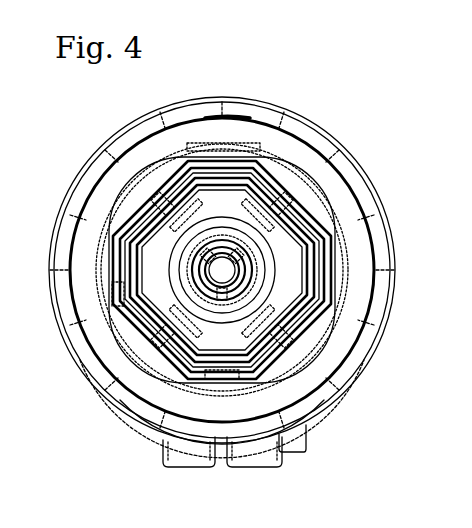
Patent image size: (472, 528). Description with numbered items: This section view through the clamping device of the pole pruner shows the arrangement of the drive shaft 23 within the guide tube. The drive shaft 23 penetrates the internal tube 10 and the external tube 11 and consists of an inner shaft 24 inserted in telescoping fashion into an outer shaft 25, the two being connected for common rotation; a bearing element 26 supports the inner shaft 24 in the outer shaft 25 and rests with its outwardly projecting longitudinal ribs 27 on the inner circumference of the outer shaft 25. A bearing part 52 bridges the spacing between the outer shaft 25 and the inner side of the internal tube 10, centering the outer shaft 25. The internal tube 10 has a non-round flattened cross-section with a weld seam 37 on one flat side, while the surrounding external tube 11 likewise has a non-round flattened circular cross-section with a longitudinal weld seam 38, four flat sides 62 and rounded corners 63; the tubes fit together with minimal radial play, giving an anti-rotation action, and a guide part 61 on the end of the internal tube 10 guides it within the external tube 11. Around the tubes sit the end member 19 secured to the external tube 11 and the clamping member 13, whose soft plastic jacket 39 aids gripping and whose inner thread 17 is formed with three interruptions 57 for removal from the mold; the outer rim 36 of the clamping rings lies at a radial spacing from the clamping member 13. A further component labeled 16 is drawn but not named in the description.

The internal tube 10 is at (326, 257).
The external tube 11 is at (321, 230).
The clamping member 13 is at (338, 160).
The outer wall 16 is at (249, 118).
The inner thread 17 is at (205, 117).
The end member 19 is at (321, 212).
The drive shaft 23 is at (282, 273).
The inner shaft 24 is at (255, 305).
The outer shaft 25 is at (283, 331).
The bearing element 26 is at (167, 364).
The longitudinal ribs 27 is at (187, 248).
The outer rim 36 is at (261, 265).
The weld seam 37 is at (123, 311).
The weld seam 38 is at (148, 208).
The jacket 39 is at (321, 130).
The bearing part 52 is at (286, 397).
The interruptions 57 is at (173, 123).
The guide part 61 is at (140, 220).
The flat sides 62 is at (279, 371).
The rounded corners 63 is at (217, 377).